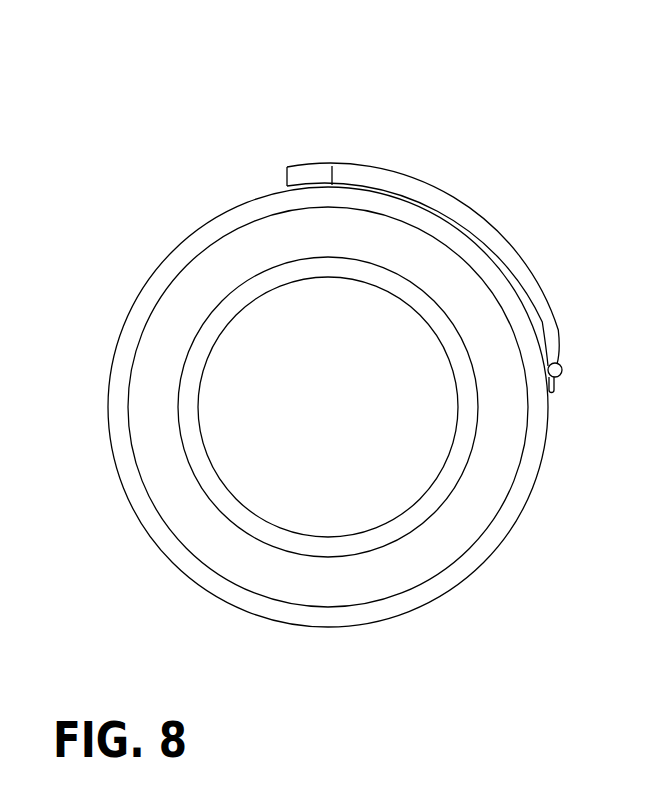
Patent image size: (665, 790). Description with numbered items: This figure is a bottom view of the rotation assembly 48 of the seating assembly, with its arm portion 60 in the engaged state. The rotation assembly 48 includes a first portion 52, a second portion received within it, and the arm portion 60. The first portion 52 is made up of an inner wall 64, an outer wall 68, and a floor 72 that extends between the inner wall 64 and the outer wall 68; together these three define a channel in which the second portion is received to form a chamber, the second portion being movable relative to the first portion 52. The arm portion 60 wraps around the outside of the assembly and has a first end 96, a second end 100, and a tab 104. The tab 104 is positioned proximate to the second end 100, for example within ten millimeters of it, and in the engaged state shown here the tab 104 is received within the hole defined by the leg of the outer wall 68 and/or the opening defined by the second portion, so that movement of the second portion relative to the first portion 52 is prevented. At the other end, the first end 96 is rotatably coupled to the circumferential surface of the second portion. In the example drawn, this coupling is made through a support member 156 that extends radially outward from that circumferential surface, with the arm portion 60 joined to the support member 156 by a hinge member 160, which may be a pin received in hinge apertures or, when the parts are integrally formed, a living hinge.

The rotation assembly 48 is at (474, 116).
The first portion 52 is at (445, 603).
The outer wall 68 is at (177, 248).
The floor 72 is at (185, 498).
The inner wall 64 is at (435, 498).
The arm portion 60 is at (507, 230).
The second end 100 is at (287, 175).
The tab 104 is at (332, 185).
The first end 96 is at (564, 373).
The hinge member 160 is at (556, 371).
The support member 156 is at (553, 393).